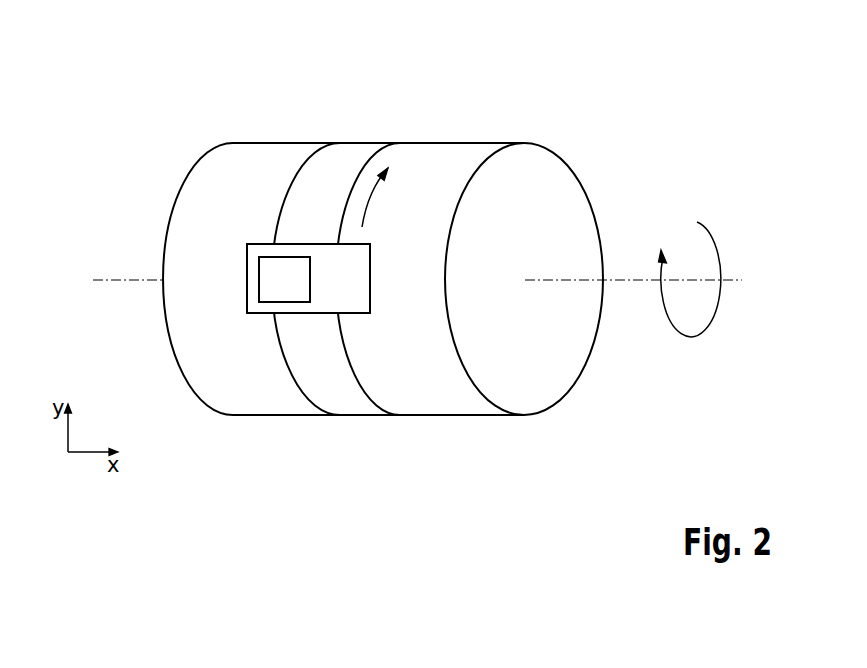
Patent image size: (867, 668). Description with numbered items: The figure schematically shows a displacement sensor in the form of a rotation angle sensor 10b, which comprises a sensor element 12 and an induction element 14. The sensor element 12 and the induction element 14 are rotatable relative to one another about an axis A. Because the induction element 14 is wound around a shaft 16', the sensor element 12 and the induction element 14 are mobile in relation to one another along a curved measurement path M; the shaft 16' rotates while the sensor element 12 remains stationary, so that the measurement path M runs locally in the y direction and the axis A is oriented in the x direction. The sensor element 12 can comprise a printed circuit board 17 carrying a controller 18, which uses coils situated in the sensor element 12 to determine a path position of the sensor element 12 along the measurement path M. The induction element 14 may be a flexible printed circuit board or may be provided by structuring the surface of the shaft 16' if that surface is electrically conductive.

The rotation angle sensor 10b is at (417, 221).
The sensor element 12 is at (308, 278).
The induction element 14 is at (361, 155).
The shaft 16' is at (544, 279).
The printed circuit board 17 is at (352, 298).
The controller 18 is at (268, 280).
The axis A is at (625, 278).
The measurement path M is at (378, 197).